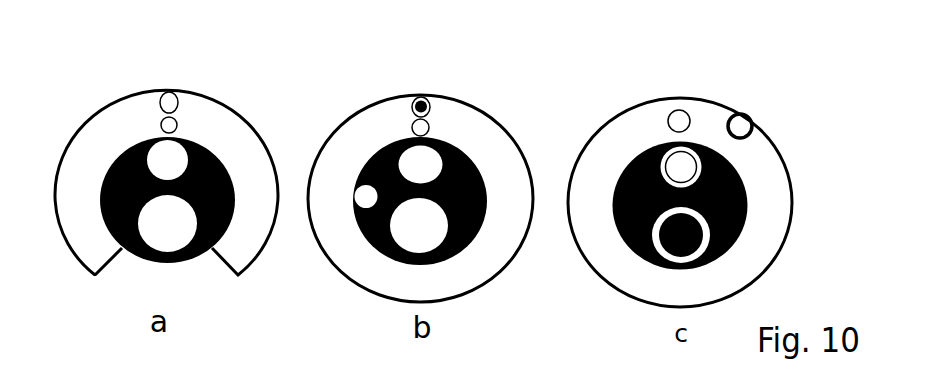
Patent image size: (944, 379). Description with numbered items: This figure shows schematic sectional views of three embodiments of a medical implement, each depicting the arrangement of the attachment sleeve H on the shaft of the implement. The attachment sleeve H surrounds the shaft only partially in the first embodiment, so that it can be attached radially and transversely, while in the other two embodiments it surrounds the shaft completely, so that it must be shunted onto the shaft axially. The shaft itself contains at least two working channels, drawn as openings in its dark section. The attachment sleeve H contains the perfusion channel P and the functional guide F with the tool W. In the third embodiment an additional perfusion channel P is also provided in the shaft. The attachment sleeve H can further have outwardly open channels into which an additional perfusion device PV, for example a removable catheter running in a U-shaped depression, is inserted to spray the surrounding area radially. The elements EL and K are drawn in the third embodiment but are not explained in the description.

The attachment sleeve H is at (378, 122).
The functional guide F is at (420, 94).
The tool W is at (425, 96).
The perfusion channel P is at (365, 195).
The perfusion device PV is at (740, 124).
The electrical line EL is at (687, 168).
The cable K is at (700, 232).